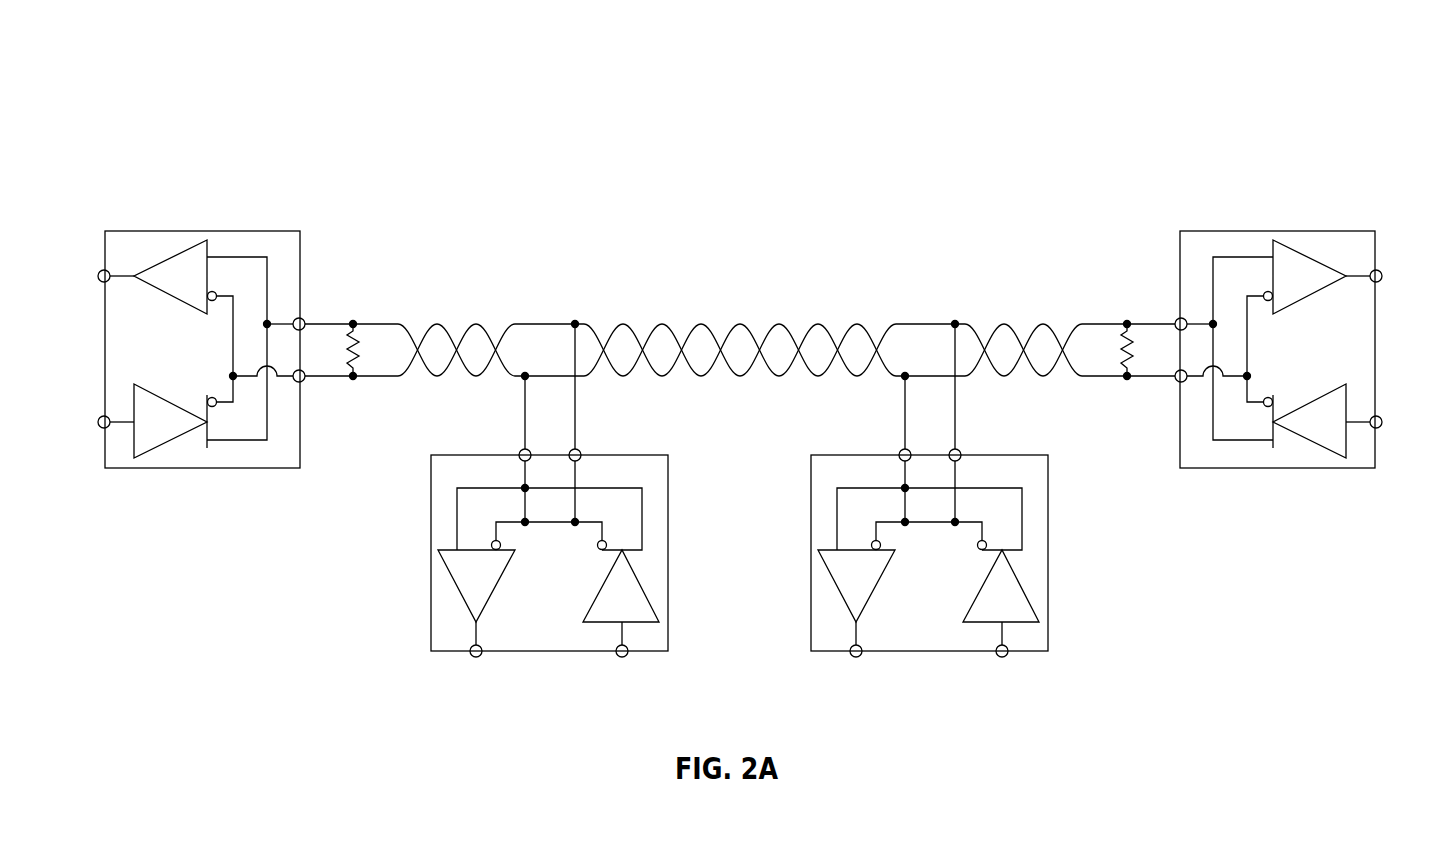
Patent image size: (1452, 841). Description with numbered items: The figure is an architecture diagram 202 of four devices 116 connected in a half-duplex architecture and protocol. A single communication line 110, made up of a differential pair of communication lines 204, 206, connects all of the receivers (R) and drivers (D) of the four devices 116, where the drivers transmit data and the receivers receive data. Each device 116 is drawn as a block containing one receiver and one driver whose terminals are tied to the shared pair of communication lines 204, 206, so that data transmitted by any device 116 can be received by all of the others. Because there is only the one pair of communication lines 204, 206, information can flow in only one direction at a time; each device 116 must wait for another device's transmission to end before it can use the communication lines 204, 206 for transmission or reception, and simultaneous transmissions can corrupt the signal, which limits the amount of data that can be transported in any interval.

The architecture diagram 202 is at (1368, 83).
The communication line 110 is at (1168, 230).
The device 116 is at (811, 483).
The communication line (first line of differential pair) 204 is at (392, 323).
The communication line (second line of differential pair) 206 is at (383, 377).